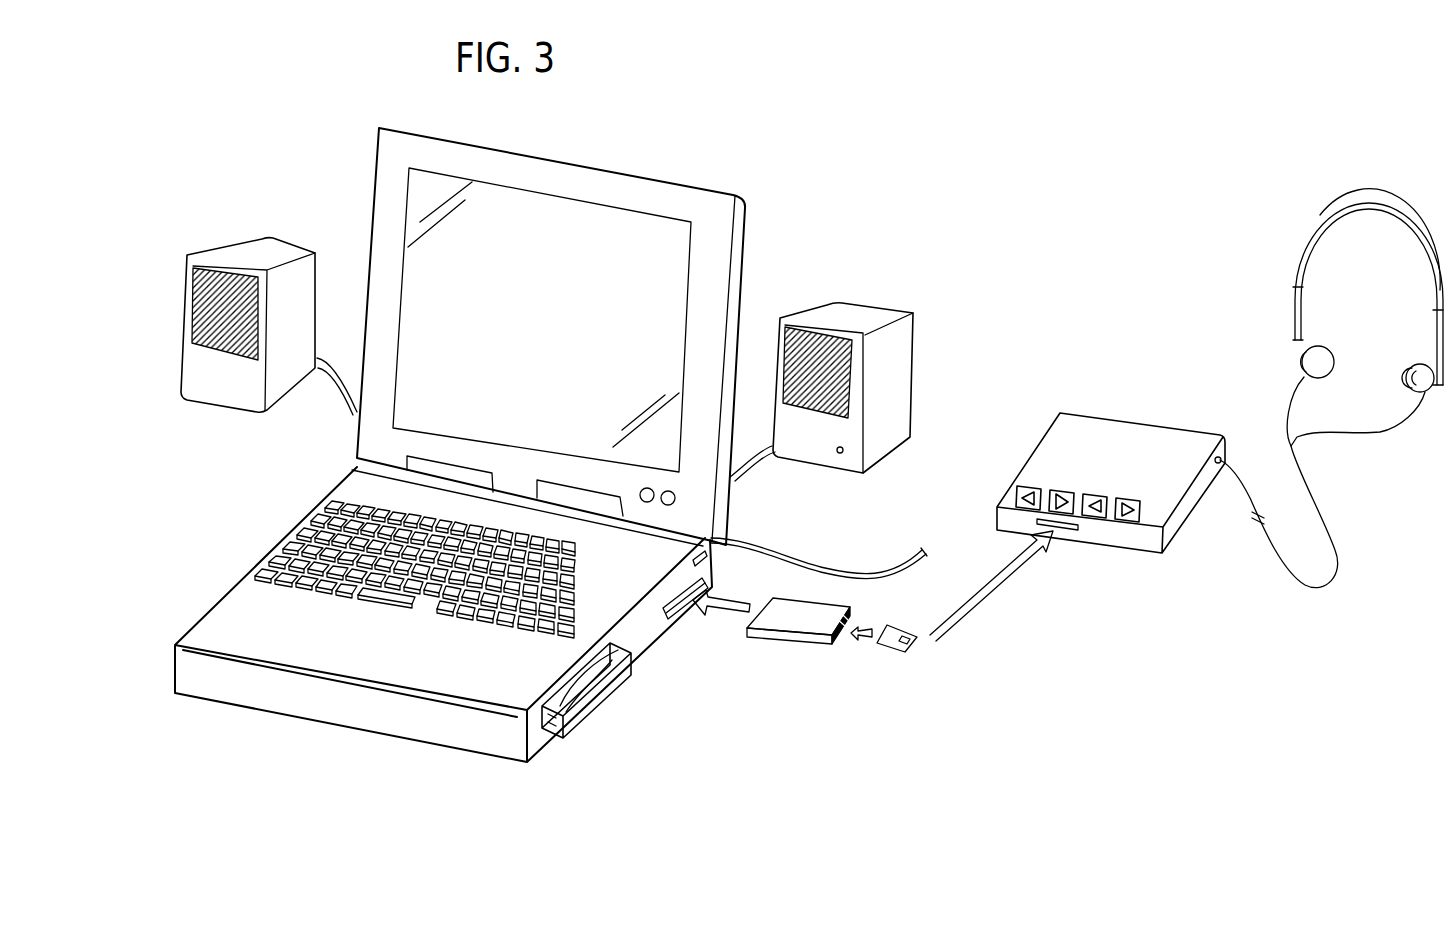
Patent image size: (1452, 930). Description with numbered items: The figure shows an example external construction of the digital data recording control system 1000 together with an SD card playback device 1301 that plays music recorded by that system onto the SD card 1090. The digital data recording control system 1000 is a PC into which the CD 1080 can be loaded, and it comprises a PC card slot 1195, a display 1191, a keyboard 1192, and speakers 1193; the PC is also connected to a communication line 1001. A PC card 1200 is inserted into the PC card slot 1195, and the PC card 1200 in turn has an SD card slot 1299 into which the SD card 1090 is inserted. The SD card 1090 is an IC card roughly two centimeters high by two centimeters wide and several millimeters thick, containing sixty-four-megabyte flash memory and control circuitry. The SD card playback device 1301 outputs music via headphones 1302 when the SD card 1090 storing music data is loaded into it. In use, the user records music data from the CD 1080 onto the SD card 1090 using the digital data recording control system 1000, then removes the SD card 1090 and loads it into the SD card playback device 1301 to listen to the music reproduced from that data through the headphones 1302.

The digital data recording control system 1000 is at (682, 178).
The display 1191 is at (667, 245).
The keyboard 1192 is at (307, 535).
The speakers 1193 is at (315, 213).
The communication line 1001 is at (797, 560).
The PC card slot 1195 is at (677, 612).
The PC card 1200 is at (850, 607).
The SD card slot 1299 is at (845, 640).
The SD card 1090 is at (915, 624).
The CD 1080 is at (550, 707).
The SD card playback device 1301 is at (1197, 402).
The headphones 1302 is at (1302, 235).